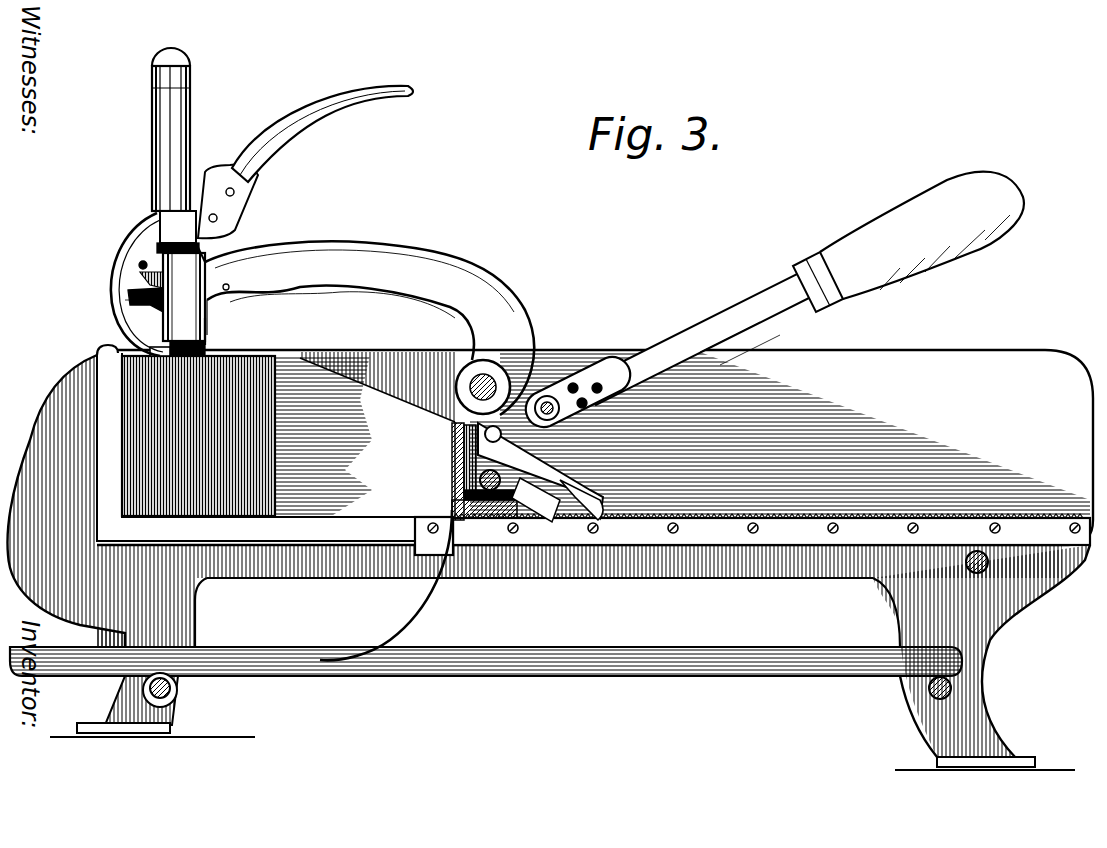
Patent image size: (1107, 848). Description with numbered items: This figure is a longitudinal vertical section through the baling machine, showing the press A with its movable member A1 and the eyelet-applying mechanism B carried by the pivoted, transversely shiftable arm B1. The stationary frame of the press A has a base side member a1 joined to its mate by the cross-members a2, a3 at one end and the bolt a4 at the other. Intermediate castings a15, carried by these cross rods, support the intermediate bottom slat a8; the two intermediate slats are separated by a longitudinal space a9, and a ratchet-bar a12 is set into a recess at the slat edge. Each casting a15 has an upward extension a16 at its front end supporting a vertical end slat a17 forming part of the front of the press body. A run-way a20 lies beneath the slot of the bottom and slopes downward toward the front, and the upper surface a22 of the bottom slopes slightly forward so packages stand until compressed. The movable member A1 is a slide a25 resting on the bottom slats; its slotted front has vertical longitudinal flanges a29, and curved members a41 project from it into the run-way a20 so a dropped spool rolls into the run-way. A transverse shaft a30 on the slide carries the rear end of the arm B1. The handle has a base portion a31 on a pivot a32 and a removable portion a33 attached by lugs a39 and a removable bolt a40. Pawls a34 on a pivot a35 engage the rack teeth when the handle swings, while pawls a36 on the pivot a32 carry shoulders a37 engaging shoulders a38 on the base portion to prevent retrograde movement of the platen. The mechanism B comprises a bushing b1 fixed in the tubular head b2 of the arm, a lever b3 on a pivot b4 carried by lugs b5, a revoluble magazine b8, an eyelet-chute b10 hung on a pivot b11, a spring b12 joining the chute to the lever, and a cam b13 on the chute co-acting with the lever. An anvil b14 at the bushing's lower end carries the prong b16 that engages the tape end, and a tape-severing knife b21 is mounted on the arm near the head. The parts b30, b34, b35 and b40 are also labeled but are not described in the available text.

The press A is at (595, 447).
The movable member A1 is at (365, 434).
The eyelet-applying mechanism B is at (80, 230).
The arm B1 is at (369, 328).
The base side member a1 is at (1000, 612).
The cross-member a2 is at (928, 690).
The cross-member a3 is at (988, 556).
The bolt a4 is at (180, 703).
The intermediate slat a8 is at (325, 515).
The longitudinal space a9 is at (256, 531).
The ratchet-bar a12 is at (771, 529).
The intermediate member a15 is at (346, 586).
The upward extension a16 is at (55, 420).
The vertical end slat a17 is at (100, 432).
The run-way a20 is at (601, 655).
The upper surface a22 is at (405, 520).
The slide a25 is at (478, 532).
The vertical longitudinal flange a29 is at (411, 470).
The transverse shaft a30 is at (470, 372).
The base portion of handle a31 is at (540, 470).
The pivot a32 is at (468, 504).
The removable portion of handle a33 is at (712, 326).
The pawl a34 is at (575, 498).
The pivot a35 is at (457, 433).
The pawl a36 is at (536, 501).
The shoulder a37 is at (458, 490).
The shoulder a38 is at (460, 478).
The lug a39 is at (597, 377).
The removable bolt a40 is at (549, 396).
The curved member a41 is at (435, 613).
The bushing b1 is at (207, 243).
The tubular head b2 is at (184, 297).
The lever b3 is at (300, 120).
The pivot b4 is at (148, 258).
The lug b5 is at (178, 271).
The revoluble magazine b8 is at (159, 138).
The eyelet-chute b10 is at (138, 265).
The pivot b11 is at (200, 212).
The spring b12 is at (138, 283).
The cam b13 is at (133, 300).
The anvil b14 is at (214, 352).
The prong b16 is at (151, 357).
The tape-severing knife b21 is at (216, 326).
The head b30 is at (166, 216).
The knob b34 is at (189, 60).
The rod band b35 is at (191, 88).
The pin b40 is at (215, 342).